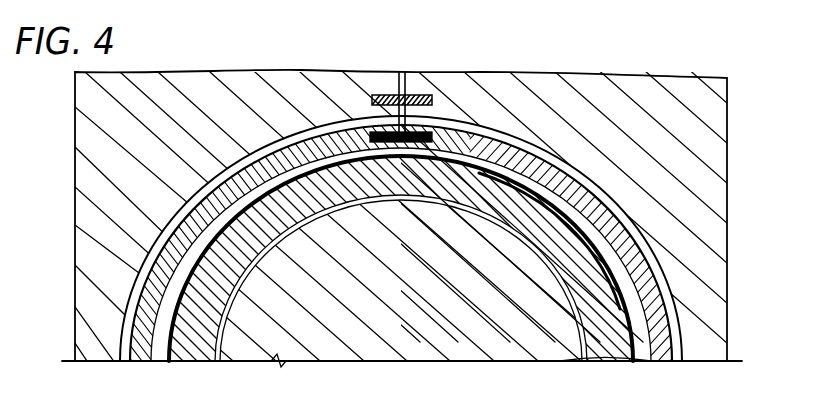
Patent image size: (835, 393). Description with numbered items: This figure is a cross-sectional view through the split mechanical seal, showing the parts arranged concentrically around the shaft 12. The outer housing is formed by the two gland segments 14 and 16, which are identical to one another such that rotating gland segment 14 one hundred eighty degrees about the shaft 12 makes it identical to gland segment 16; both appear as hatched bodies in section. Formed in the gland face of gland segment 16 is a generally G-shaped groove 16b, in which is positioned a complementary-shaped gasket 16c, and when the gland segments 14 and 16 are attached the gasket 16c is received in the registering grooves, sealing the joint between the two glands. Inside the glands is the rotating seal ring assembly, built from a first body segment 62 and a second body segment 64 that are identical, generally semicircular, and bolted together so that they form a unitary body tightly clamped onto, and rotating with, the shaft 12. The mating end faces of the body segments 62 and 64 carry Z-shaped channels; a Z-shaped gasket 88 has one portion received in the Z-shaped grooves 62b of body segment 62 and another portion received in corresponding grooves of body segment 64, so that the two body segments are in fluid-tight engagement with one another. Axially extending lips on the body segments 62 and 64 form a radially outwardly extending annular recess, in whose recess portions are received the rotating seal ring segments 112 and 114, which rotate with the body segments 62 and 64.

The shaft 12 is at (496, 342).
The gland segment 14 is at (675, 93).
The gland segment 16 is at (170, 92).
The G-shaped groove 16b is at (379, 97).
The gasket 16c is at (423, 93).
The first body segment 62 is at (263, 170).
The Z-shaped grooves 62b is at (360, 128).
The second body segment 64 is at (513, 153).
The Z-shaped gasket 88 is at (435, 135).
The rotating seal ring segment 112 is at (193, 295).
The rotating seal ring segment 114 is at (605, 300).